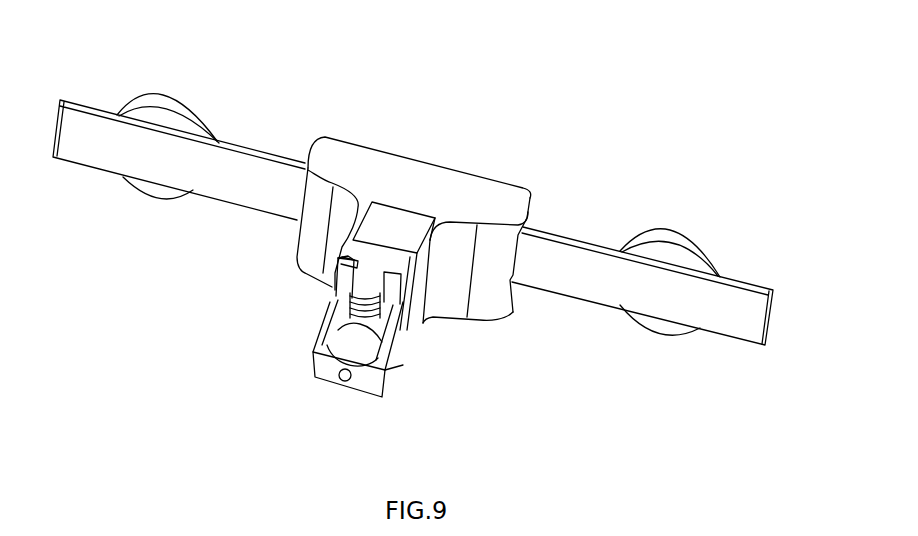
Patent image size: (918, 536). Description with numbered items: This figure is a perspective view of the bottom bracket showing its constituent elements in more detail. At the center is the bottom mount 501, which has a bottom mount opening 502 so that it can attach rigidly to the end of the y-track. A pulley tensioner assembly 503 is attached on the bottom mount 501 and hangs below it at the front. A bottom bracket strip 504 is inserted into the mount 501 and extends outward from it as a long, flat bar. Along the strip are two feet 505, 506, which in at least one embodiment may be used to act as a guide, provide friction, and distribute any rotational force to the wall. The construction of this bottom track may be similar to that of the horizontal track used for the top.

The bottom mount 501 is at (467, 188).
The bottom mount opening 502 is at (390, 223).
The pulley tensioner assembly 503 is at (327, 332).
The bottom bracket strip 504 is at (657, 292).
The foot 505 is at (177, 95).
The foot 506 is at (673, 230).